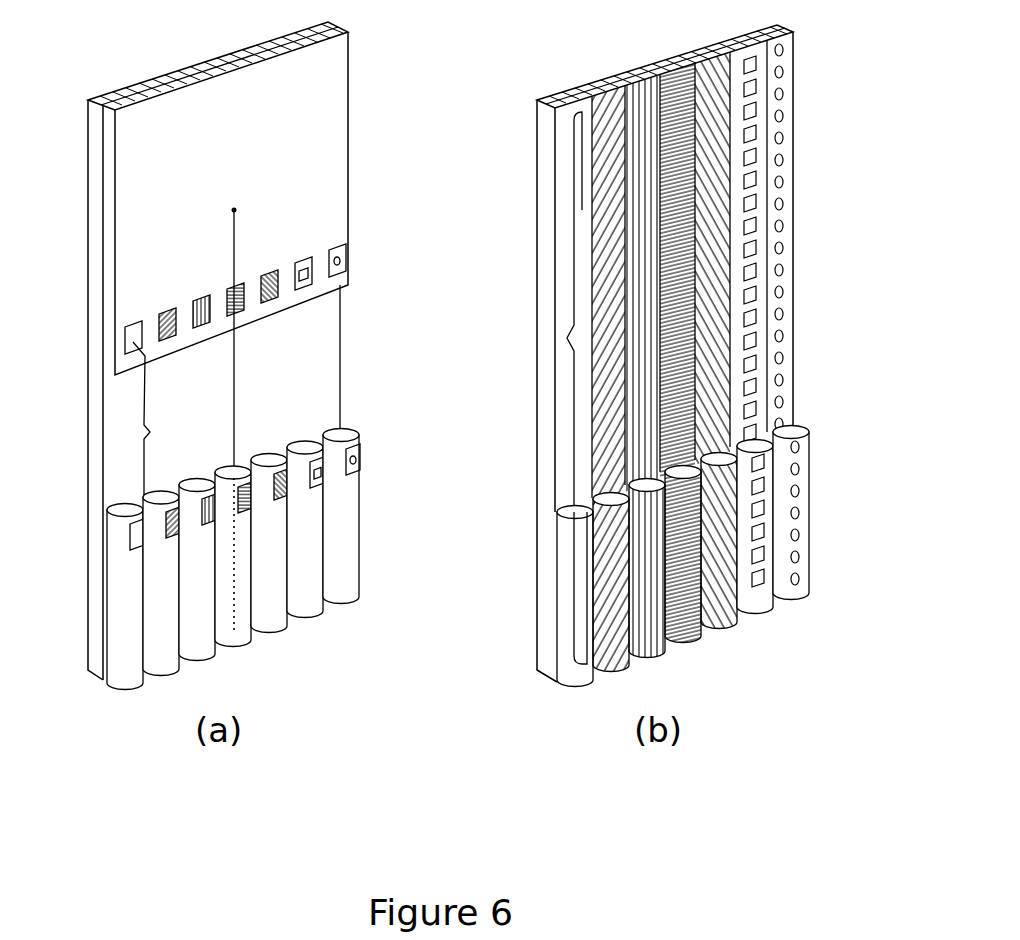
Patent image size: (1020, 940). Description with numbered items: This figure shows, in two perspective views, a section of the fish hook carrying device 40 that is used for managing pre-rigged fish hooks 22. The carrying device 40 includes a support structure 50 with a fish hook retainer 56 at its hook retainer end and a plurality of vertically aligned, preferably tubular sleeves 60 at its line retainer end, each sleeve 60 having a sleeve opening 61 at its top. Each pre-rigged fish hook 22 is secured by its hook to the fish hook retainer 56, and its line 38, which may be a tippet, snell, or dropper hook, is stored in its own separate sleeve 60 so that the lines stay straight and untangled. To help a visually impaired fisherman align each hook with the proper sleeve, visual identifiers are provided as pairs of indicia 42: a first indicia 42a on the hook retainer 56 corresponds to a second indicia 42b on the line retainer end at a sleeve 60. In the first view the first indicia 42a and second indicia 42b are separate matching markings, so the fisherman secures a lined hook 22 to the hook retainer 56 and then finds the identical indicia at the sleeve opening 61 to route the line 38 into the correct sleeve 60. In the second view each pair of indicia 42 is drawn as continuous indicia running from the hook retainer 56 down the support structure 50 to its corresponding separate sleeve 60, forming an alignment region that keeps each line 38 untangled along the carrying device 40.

The pre-rigged fish hook 22 is at (233, 158).
The line 38 is at (236, 385).
The fish hook carrying device 40 is at (378, 97).
The pair of indicia 42 is at (562, 338).
The first indicia 42a is at (338, 272).
The second indicia 42b is at (364, 433).
The support structure 50 is at (95, 456).
The fish hook retainer 56 is at (771, 22).
The sleeve 60 is at (338, 520).
The sleeve opening 61 is at (340, 428).